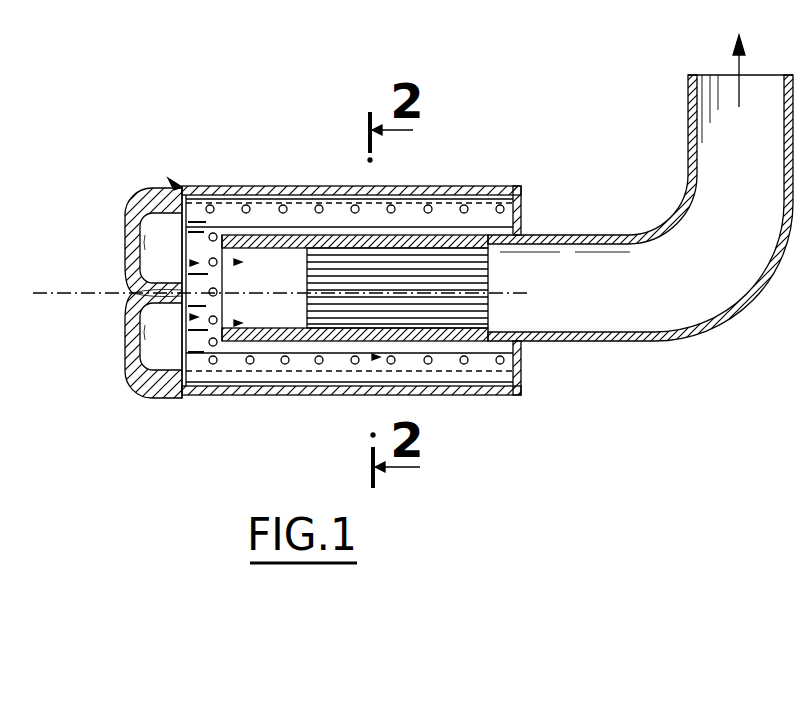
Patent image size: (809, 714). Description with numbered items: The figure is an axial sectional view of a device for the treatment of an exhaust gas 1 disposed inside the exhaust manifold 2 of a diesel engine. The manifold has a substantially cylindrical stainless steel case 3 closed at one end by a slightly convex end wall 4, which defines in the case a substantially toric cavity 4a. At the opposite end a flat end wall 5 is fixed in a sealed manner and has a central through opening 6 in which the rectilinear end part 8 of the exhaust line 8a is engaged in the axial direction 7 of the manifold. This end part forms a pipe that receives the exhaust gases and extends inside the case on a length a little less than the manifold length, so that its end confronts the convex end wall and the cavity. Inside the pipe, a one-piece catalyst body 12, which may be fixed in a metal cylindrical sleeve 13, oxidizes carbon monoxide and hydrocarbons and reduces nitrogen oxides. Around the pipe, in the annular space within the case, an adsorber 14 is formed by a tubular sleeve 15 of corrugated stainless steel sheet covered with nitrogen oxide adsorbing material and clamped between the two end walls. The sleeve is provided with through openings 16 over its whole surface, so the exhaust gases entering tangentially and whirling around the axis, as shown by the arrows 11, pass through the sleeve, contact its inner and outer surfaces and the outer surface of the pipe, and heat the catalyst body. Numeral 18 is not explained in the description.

The device for the treatment of an exhaust gas 1 is at (335, 215).
The exhaust manifold 2 is at (431, 162).
The case 3 is at (502, 186).
The end wall 4 is at (137, 224).
The cavity 4a is at (130, 347).
The flat end wall 5 is at (523, 360).
The central through opening 6 is at (523, 233).
The axial direction 7 is at (53, 293).
The rectilinear end part 8 is at (293, 236).
The exhaust line 8a is at (687, 337).
The arrows 11 is at (262, 338).
The catalyst body 12 is at (452, 312).
The cylindrical sleeve 13 is at (490, 330).
The adsorber 14 is at (172, 184).
The tubular sleeve 15 is at (186, 200).
The through openings 16 is at (247, 205).
The chambers 18 is at (147, 252).